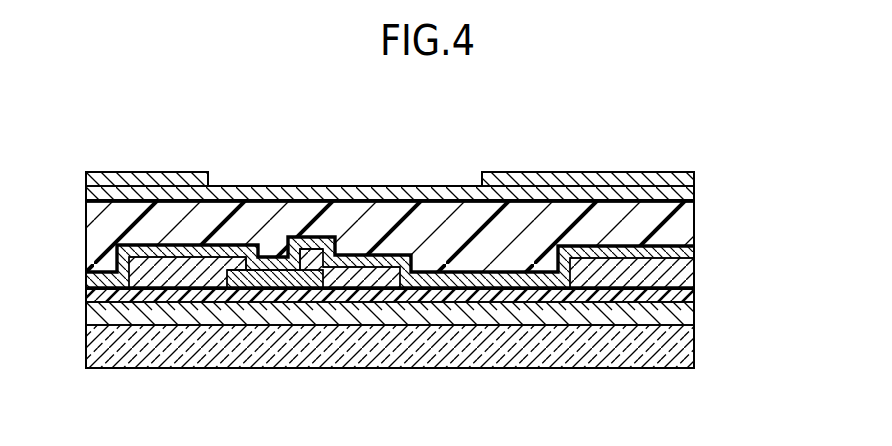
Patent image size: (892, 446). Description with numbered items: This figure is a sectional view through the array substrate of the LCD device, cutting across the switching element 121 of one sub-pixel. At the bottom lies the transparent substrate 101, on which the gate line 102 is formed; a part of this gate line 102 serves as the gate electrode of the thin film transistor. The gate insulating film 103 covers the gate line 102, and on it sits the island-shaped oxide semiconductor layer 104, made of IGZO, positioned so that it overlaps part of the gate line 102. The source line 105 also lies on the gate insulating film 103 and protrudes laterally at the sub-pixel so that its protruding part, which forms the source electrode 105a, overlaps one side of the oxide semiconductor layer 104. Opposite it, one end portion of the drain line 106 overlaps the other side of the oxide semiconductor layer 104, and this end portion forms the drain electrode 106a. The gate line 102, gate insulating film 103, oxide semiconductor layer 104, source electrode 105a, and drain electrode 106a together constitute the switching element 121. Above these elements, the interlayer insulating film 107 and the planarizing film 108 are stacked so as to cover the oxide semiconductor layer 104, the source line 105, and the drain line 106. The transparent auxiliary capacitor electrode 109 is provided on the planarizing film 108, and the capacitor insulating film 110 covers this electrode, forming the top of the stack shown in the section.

The transparent substrate 101 is at (694, 347).
The gate line 102 is at (694, 313).
The gate insulating film 103 is at (694, 294).
The oxide semiconductor layer 104 is at (283, 278).
The source line 105 is at (184, 268).
The source electrode 105a is at (245, 250).
The drain line 106 is at (378, 274).
The drain electrode 106a is at (302, 250).
The interlayer insulating film 107 is at (694, 252).
The planarizing film 108 is at (694, 222).
The transparent auxiliary capacitor electrode 109 is at (694, 192).
The capacitor insulating film 110 is at (694, 179).
The switching element 121 is at (276, 250).